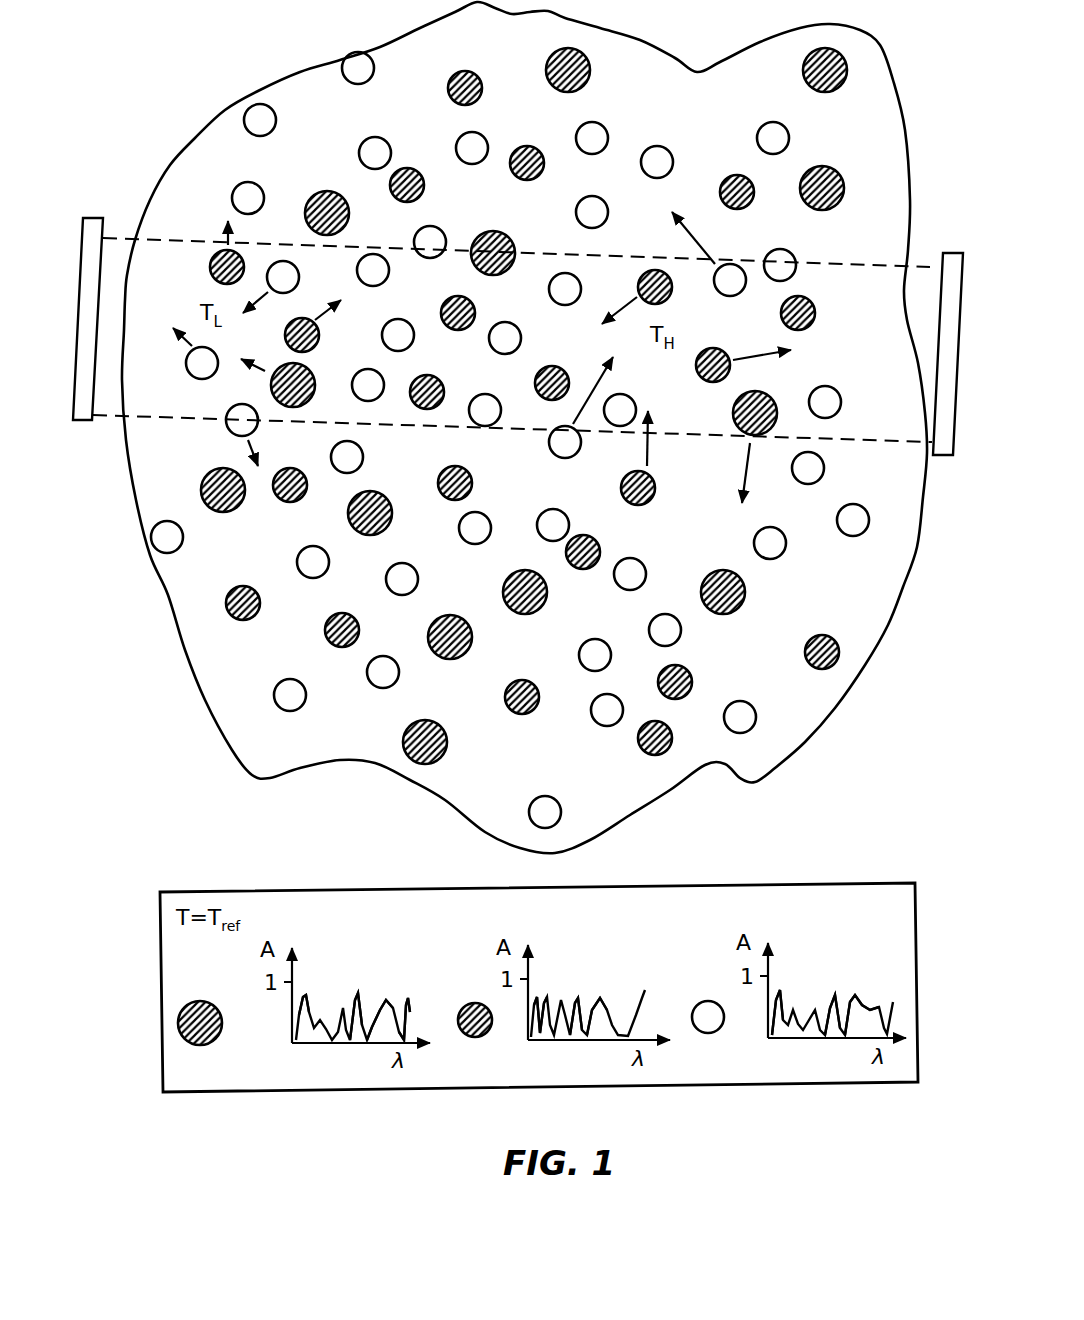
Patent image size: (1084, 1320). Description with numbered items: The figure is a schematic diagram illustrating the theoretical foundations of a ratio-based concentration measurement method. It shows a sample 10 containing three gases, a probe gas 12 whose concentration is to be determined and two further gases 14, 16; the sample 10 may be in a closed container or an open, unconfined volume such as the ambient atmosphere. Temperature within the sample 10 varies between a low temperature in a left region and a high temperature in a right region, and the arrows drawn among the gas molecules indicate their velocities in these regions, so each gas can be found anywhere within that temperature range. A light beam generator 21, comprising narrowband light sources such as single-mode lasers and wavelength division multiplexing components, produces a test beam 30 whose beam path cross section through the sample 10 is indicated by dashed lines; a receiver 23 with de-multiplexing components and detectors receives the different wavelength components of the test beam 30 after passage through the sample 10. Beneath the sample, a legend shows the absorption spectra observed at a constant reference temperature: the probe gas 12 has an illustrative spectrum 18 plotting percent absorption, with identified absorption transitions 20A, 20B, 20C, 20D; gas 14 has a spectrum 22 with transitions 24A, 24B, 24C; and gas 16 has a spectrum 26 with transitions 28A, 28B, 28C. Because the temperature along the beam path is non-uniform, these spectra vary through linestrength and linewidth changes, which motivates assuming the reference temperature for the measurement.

The sample 10 is at (228, 82).
The probe gas 12 is at (840, 205).
The gas 14 is at (815, 310).
The gas 16 is at (838, 412).
The absorption spectrum 18 is at (275, 1033).
The absorption transition 20A is at (302, 990).
The absorption transition 20B is at (356, 985).
The absorption transition 20C is at (372, 995).
The absorption transition 20D is at (398, 1003).
The light beam generator 21 is at (96, 218).
The absorption spectrum 22 is at (518, 1033).
The receiver 23 is at (952, 253).
The absorption transition 24A is at (540, 985).
The absorption transition 24B is at (575, 990).
The absorption transition 24C is at (600, 995).
The absorption spectrum 26 is at (756, 1032).
The absorption transition 28A is at (780, 985).
The absorption transition 28B is at (836, 985).
The absorption transition 28C is at (862, 992).
The test beam 30 is at (226, 421).